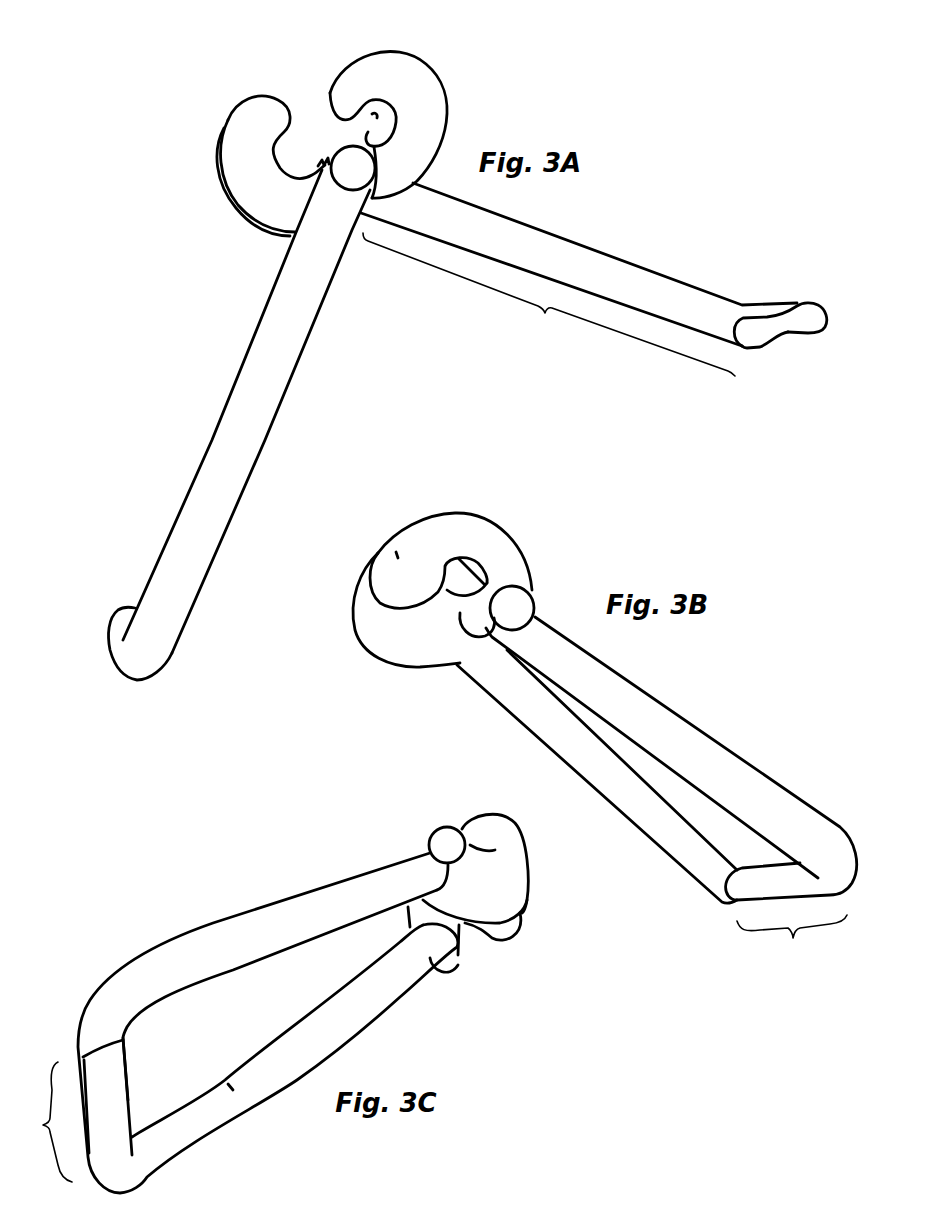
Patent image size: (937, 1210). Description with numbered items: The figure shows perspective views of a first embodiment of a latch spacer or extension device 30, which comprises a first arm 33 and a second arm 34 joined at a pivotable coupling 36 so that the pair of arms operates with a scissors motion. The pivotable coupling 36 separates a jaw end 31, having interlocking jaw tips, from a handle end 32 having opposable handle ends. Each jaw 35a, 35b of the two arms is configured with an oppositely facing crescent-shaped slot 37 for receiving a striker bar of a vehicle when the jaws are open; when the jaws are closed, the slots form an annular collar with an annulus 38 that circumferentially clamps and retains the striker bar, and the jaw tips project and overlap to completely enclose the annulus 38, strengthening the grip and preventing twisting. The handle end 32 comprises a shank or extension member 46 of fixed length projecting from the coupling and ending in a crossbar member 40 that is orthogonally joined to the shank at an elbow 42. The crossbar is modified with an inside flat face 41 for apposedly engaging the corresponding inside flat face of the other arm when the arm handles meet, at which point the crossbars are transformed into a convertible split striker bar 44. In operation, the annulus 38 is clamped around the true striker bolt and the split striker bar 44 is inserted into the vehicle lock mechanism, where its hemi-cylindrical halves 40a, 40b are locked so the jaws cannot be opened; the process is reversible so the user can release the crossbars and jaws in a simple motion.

In FIG. 3A, the latch spacer or extension device 30 is at (373, 346).
In FIG. 3A, the jaw end 31 is at (459, 102).
In FIG. 3B, the jaw end 31 is at (375, 524).
In FIG. 3C, the jaw end 31 is at (545, 896).
In FIG. 3A, the handle end 32 is at (748, 391).
In FIG. 3B, the handle end 32 is at (845, 838).
In FIG. 3C, the handle end 32 is at (65, 984).
In FIG. 3A, the first arm 33 is at (222, 405).
In FIG. 3A, the second arm 34 is at (613, 262).
In FIG. 3A, the jaw 35a is at (220, 140).
In FIG. 3A, the jaw 35b is at (405, 60).
In FIG. 3A, the pivotable coupling 36 is at (343, 150).
In FIG. 3B, the pivotable coupling 36 is at (530, 600).
In FIG. 3C, the pivotable coupling 36 is at (433, 834).
In FIG. 3A, the crescent-shaped slot 37 is at (368, 118).
In FIG. 3B, the annulus 38 is at (445, 595).
In FIG. 3A, the crossbar member 40 is at (817, 303).
In FIG. 3C, the hemi-cylindrical half of the split striker bar 40a is at (78, 1043).
In FIG. 3C, the hemi-cylindrical half of the split striker bar 40b is at (132, 1100).
In FIG. 3A, the inside flat face 41 is at (784, 331).
In FIG. 3A, the elbow 42 is at (147, 668).
In FIG. 3B, the split striker bar 44 is at (792, 941).
In FIG. 3C, the split striker bar 44 is at (43, 1122).
In FIG. 3A, the shank or extension member 46 is at (549, 304).